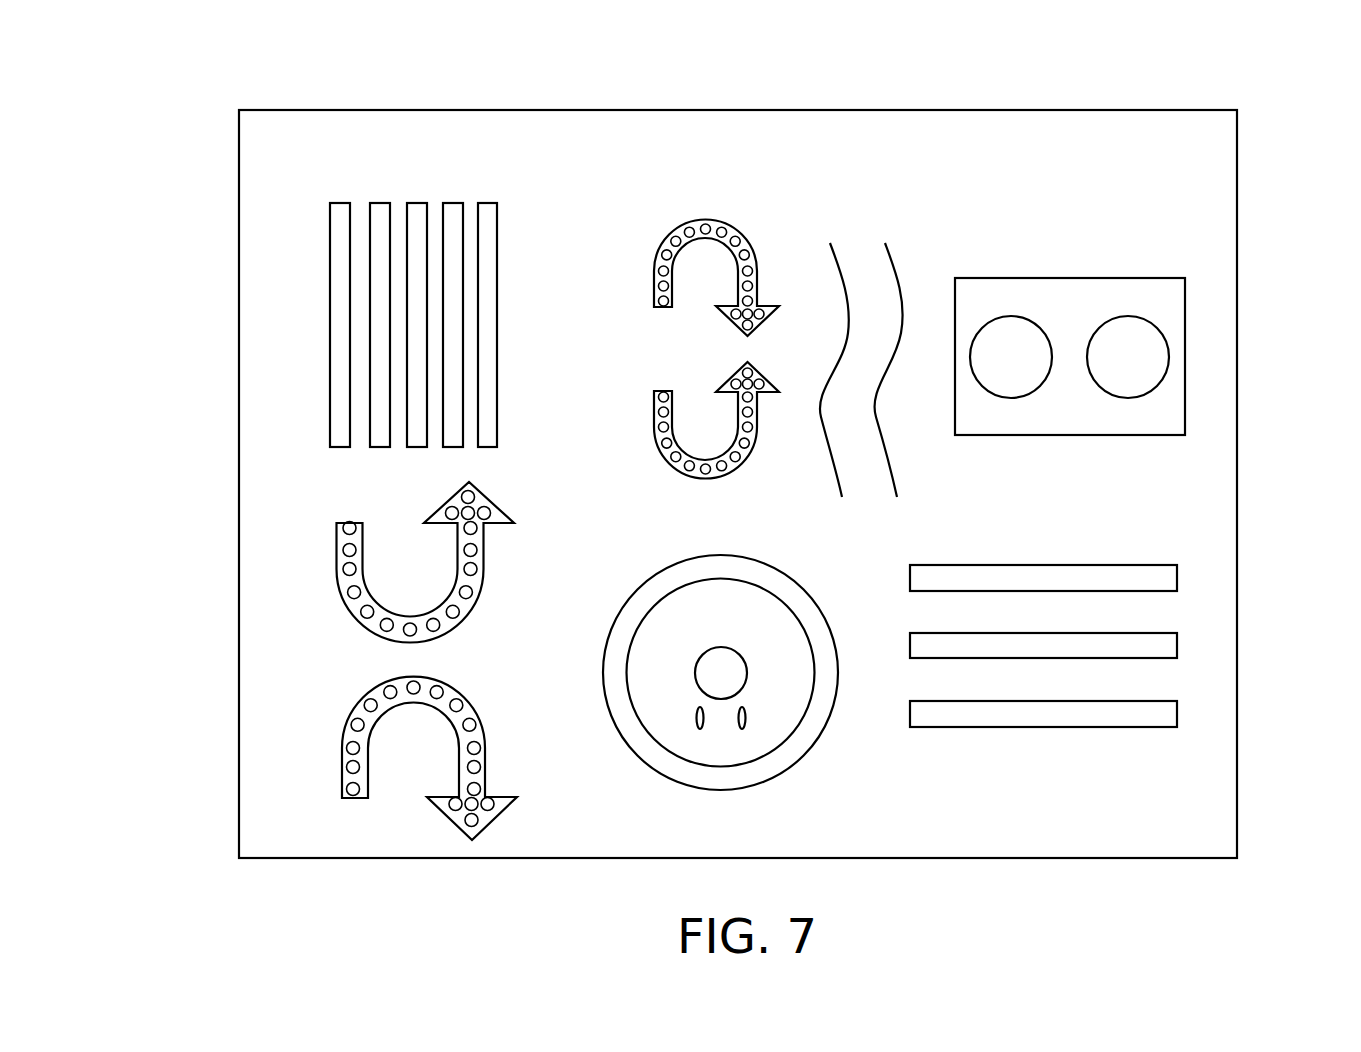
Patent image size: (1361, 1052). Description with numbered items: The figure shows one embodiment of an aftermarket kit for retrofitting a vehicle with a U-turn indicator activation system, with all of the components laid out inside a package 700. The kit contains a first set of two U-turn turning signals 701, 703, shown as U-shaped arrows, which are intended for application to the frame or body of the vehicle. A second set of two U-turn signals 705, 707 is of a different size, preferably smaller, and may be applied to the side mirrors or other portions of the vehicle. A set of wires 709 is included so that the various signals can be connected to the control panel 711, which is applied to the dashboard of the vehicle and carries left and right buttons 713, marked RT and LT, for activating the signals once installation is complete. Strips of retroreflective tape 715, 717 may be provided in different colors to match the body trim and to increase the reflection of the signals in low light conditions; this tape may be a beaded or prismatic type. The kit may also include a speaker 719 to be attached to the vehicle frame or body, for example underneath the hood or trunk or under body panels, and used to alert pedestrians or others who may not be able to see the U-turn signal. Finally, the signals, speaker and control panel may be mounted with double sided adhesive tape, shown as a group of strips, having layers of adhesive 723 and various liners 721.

The package 700 is at (239, 257).
The U-turn turning signal 701 is at (338, 585).
The U-turn turning signal 703 is at (342, 747).
The U-turn signal 705 is at (705, 222).
The U-turn signal 707 is at (748, 362).
The set of wires 709 is at (897, 280).
The control panel 711 is at (1137, 239).
The left and right buttons 713 is at (1140, 317).
The retroreflective tape 715 is at (1177, 575).
The retroreflective tape 717 is at (1177, 645).
The speaker 719 is at (625, 738).
The liners 721 is at (338, 245).
The layers of adhesive 723 is at (452, 207).